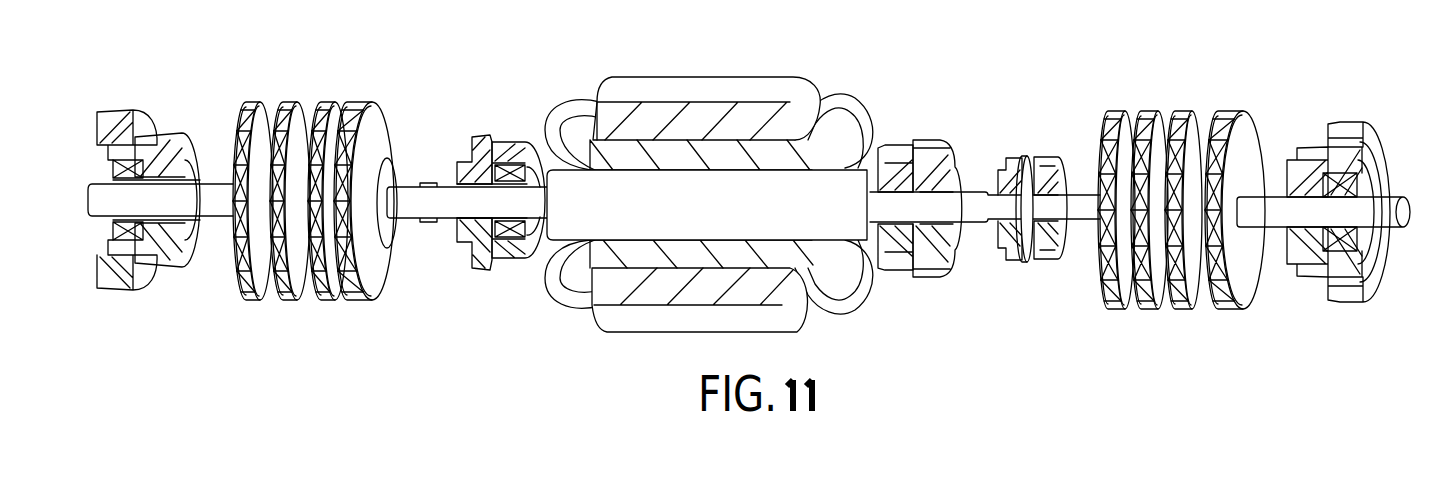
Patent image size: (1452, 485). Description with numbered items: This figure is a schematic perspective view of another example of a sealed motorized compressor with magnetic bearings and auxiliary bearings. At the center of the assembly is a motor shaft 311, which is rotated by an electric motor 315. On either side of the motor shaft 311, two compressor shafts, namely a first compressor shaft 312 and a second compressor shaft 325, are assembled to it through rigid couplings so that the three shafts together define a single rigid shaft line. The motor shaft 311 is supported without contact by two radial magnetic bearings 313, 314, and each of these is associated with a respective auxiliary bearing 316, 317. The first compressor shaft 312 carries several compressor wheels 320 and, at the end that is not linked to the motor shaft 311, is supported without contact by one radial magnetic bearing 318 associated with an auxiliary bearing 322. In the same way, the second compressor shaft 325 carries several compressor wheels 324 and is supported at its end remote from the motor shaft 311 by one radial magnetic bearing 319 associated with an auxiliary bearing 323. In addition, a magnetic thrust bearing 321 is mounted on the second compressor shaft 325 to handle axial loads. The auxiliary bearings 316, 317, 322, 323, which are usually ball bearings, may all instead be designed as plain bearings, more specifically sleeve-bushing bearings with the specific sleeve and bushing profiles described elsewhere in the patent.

The motor shaft 311 is at (973, 213).
The first compressor shaft 312 is at (397, 207).
The radial magnetic bearing 313 is at (513, 147).
The radial magnetic bearing 314 is at (918, 157).
The electric motor 315 is at (702, 92).
The auxiliary bearing 316 is at (457, 170).
The auxiliary bearing 317 is at (950, 172).
The radial magnetic bearing 318 is at (123, 115).
The radial magnetic bearing 319 is at (1353, 128).
The compressor wheels 320 is at (297, 102).
The magnetic thrust bearing 321 is at (1047, 160).
The auxiliary bearing 322 is at (168, 165).
The auxiliary bearing 323 is at (1307, 175).
The compressor wheels 324 is at (1178, 113).
The second compressor shaft 325 is at (1275, 228).